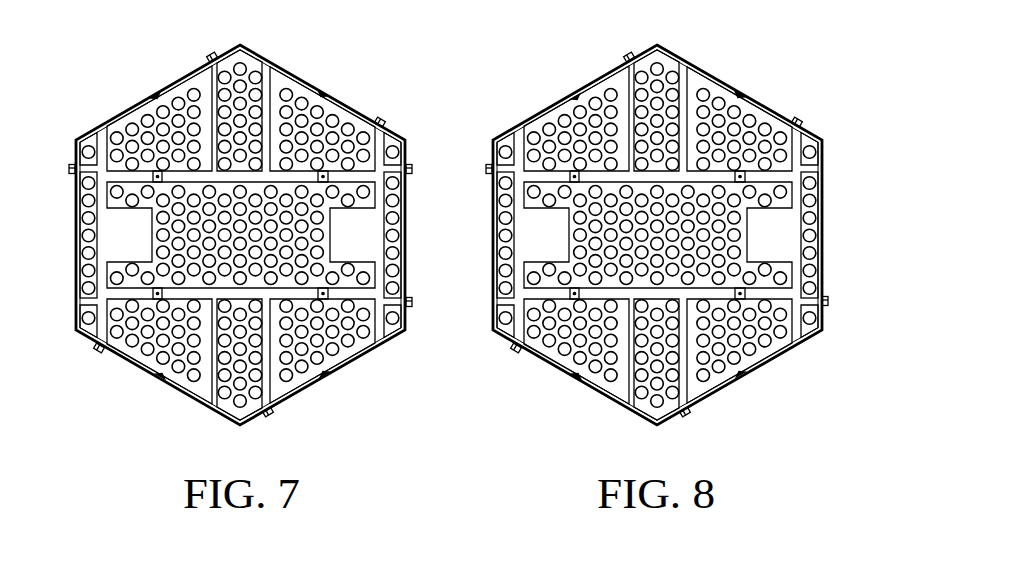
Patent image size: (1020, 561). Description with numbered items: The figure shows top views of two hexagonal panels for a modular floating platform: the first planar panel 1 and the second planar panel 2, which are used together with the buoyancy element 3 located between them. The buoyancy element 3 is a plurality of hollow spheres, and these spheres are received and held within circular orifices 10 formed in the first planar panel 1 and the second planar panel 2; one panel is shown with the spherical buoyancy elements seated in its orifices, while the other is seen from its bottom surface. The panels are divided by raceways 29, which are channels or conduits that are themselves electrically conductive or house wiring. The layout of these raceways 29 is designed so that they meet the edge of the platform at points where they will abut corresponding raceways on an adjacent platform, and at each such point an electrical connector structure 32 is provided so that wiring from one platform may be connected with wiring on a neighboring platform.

In FIG. 8, the first planar panel 1 is at (762, 115).
In FIG. 7, the second planar panel 2 is at (125, 132).
In FIG. 7, the buoyancy element 3 is at (148, 120).
In FIG. 8, the circular orifice 10 is at (703, 93).
In FIG. 7, the raceway 29 is at (212, 115).
In FIG. 8, the raceway 29 is at (657, 235).
In FIG. 7, the electrical connector structure 32 is at (387, 112).
In FIG. 8, the electrical connector structure 32 is at (698, 426).